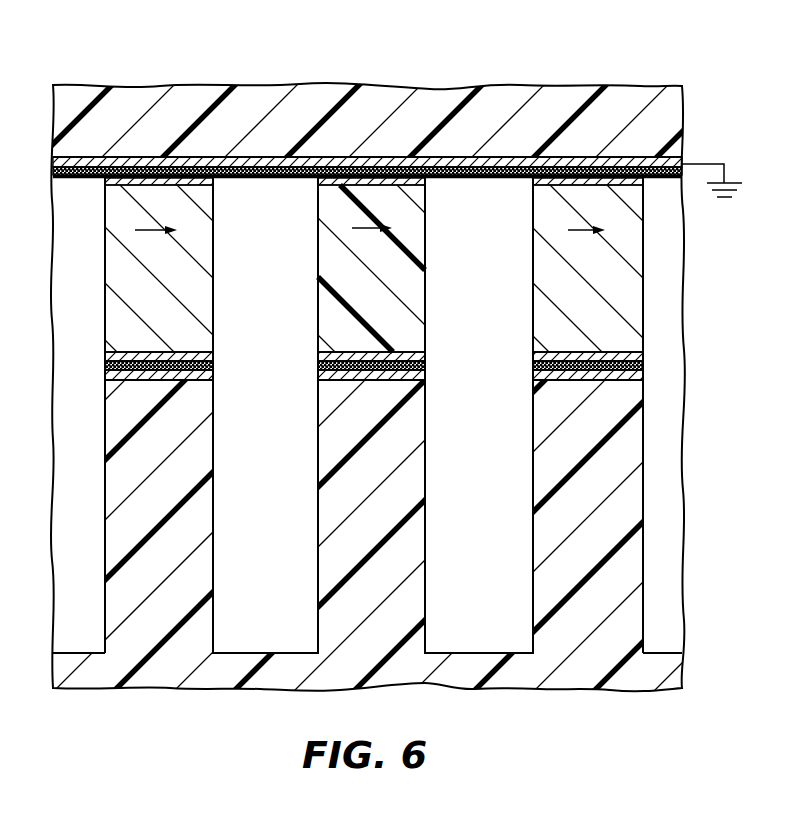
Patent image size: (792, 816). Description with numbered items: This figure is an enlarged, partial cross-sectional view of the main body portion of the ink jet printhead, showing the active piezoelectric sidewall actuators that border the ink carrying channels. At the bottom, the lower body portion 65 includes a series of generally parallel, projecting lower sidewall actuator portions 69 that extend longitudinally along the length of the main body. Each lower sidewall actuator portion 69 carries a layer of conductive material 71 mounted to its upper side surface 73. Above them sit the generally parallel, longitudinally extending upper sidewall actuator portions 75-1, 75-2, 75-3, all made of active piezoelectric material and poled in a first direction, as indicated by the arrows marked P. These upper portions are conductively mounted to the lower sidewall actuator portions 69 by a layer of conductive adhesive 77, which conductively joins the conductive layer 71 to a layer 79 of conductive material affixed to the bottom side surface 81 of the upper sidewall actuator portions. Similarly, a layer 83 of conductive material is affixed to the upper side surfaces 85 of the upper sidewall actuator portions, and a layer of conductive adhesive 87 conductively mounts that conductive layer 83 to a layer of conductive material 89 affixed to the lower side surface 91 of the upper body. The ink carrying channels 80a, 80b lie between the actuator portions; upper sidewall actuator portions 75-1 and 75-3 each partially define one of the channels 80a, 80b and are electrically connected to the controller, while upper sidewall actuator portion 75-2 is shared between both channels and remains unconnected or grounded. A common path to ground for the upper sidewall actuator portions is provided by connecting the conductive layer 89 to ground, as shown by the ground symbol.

The lower body portion 65 is at (468, 690).
The lower sidewall actuator portion 69 is at (440, 86).
The layer of conductive material 71 is at (645, 365).
The upper side surface 73 is at (630, 383).
The upper sidewall actuator portion 75-1 is at (213, 303).
The upper sidewall actuator portion 75-2 is at (427, 283).
The upper sidewall actuator portion 75-3 is at (645, 265).
The layer of conductive adhesive 77 is at (645, 356).
The layer of conductive material 79 is at (538, 365).
The ink carrying channel 80a is at (289, 387).
The ink carrying channel 80b is at (503, 387).
The bottom side surface 81 is at (572, 352).
The layer of conductive material 83 is at (430, 183).
The upper side surface 85 is at (320, 186).
The layer of conductive adhesive 87 is at (286, 157).
The layer of conductive material 89 is at (683, 162).
The lower side surface 91 is at (519, 153).